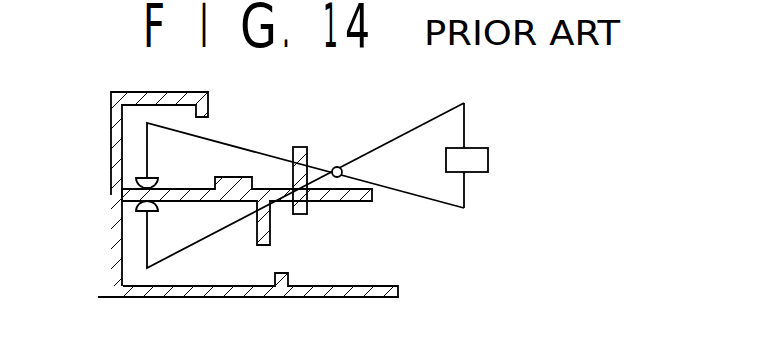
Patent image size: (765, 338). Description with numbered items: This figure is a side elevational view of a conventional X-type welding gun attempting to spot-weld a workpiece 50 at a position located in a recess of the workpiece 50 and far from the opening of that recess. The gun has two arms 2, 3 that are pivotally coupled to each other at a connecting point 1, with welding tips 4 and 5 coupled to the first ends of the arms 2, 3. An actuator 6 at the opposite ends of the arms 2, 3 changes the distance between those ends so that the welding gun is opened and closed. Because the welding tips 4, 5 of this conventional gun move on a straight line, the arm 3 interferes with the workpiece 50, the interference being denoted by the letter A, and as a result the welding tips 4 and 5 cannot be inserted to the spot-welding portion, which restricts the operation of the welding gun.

The workpiece 50 is at (112, 128).
The arm 2 is at (232, 142).
The arm 3 is at (193, 244).
The welding tip 4 is at (158, 181).
The welding tip 5 is at (158, 208).
The interference A is at (300, 147).
The connecting point 1 is at (338, 166).
The actuator 6 is at (488, 160).